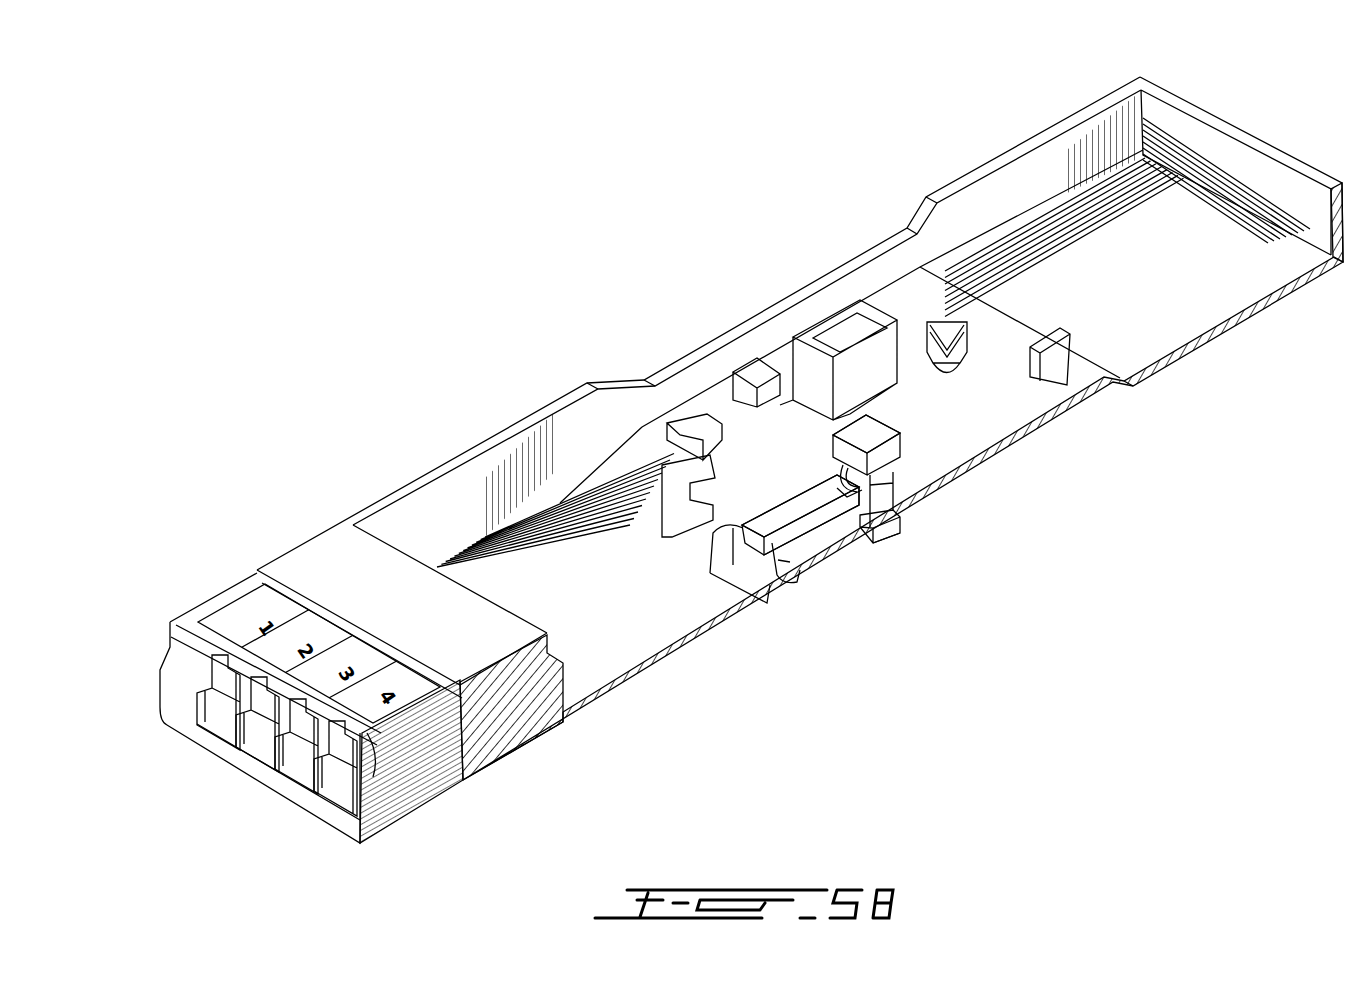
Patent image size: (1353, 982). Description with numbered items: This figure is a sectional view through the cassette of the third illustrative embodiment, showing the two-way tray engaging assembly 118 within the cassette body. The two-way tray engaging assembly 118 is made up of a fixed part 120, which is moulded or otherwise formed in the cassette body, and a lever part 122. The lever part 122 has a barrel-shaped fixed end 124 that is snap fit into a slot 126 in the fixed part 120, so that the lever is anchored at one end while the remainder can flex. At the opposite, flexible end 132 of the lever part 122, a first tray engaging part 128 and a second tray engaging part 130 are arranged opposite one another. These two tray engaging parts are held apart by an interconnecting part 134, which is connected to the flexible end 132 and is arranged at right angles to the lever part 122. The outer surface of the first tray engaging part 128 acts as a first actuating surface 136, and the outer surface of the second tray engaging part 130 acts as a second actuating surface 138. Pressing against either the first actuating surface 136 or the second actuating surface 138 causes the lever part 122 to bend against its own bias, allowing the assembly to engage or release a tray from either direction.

The two-way tray engaging assembly 118 is at (815, 505).
The fixed part 120 is at (728, 545).
The lever part 122 is at (827, 505).
The barrel-shaped fixed end 124 is at (783, 572).
The slot 126 is at (793, 578).
The first tray engaging part 128 is at (897, 520).
The second tray engaging part 130 is at (887, 450).
The flexible end 132 is at (862, 492).
The interconnecting part 134 is at (887, 472).
The first actuating surface 136 is at (873, 433).
The second actuating surface 138 is at (893, 540).